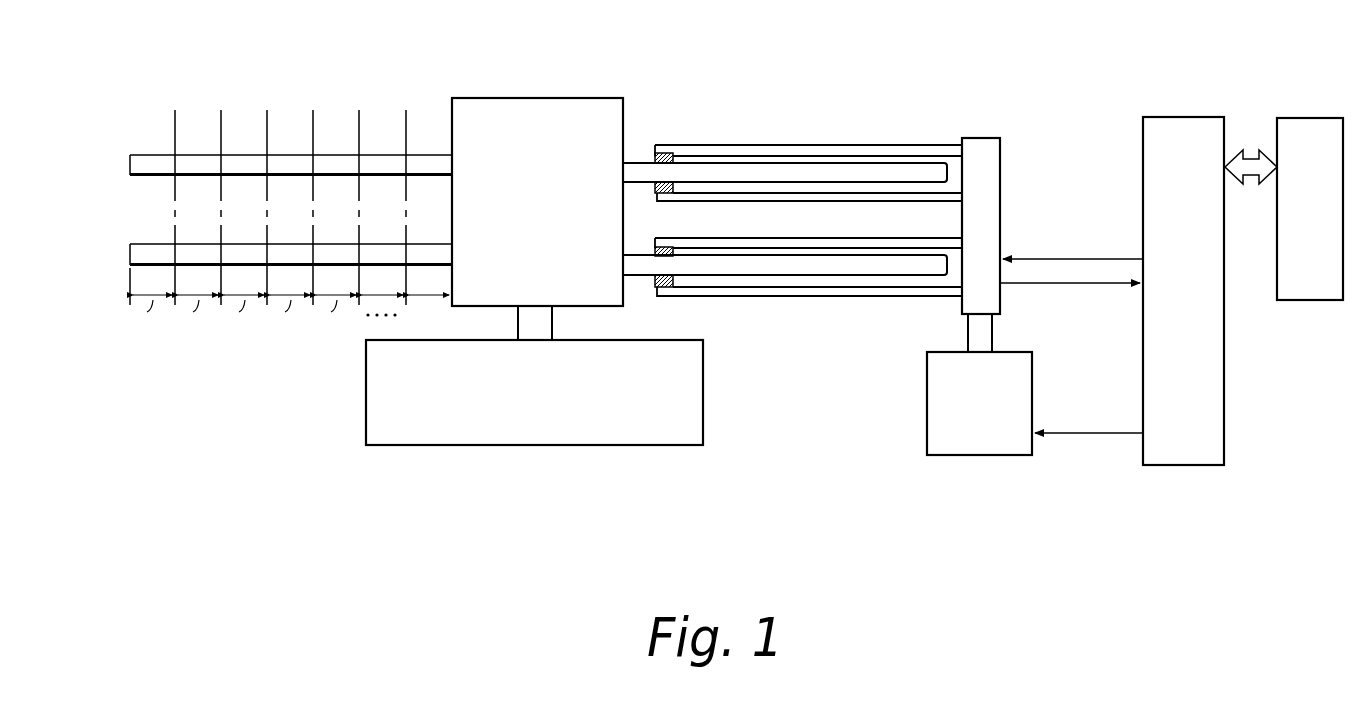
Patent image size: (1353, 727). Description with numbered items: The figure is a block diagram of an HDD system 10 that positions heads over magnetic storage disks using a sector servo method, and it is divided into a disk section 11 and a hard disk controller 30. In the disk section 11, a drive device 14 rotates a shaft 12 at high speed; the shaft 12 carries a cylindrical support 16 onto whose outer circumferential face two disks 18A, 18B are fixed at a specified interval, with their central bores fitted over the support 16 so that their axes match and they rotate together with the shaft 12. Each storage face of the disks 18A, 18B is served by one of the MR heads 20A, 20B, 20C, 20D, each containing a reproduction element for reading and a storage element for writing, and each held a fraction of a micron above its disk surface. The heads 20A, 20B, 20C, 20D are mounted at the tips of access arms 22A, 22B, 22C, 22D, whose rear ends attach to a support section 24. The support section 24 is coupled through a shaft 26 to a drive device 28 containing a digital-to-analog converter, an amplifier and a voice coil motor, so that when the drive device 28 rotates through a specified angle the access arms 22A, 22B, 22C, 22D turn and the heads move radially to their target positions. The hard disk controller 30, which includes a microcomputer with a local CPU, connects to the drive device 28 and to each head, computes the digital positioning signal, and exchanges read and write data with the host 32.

The HDD system 10 is at (192, 92).
The disk section 11 is at (782, 460).
The shaft 12 is at (552, 315).
The drive device 14 is at (705, 418).
The support 16 is at (597, 97).
The disk 18A is at (130, 168).
The disk 18B is at (130, 257).
The head 20A is at (655, 157).
The head 20B is at (673, 189).
The head 20C is at (655, 250).
The head 20D is at (673, 283).
The access arm 22A is at (886, 146).
The access arm 22B is at (801, 203).
The access arm 22C is at (886, 239).
The access arm 22D is at (801, 297).
The support section 24 is at (1001, 151).
The shaft 26 is at (993, 339).
The drive device 28 is at (1000, 458).
The hard disk controller 30 is at (1200, 467).
The host 32 is at (1328, 301).